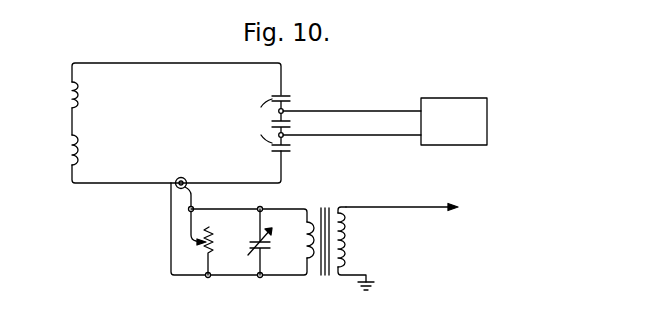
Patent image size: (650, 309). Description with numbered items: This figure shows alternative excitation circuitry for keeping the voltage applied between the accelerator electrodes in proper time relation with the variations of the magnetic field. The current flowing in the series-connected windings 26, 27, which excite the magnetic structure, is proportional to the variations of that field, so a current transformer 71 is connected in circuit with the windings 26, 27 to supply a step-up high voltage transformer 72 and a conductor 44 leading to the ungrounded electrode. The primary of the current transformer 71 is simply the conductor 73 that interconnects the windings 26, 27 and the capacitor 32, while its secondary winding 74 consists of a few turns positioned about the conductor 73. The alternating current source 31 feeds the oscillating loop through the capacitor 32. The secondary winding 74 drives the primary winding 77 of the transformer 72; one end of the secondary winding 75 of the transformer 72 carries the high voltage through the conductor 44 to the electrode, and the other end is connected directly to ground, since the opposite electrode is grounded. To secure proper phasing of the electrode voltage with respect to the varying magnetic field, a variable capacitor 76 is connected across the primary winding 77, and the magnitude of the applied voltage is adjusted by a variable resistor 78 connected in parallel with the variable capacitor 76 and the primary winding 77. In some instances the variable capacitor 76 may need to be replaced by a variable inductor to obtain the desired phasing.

The winding 26 is at (68, 96).
The winding 27 is at (68, 152).
The source of alternating current 31 is at (468, 146).
The capacitor 32 is at (272, 124).
The conductor 44 is at (410, 206).
The current transformer 71 is at (190, 175).
The step-up high voltage transformer 72 is at (338, 205).
The conductor 73 is at (88, 186).
The secondary winding 74 is at (194, 190).
The secondary winding 75 is at (351, 240).
The variable capacitor 76 is at (274, 242).
The primary winding 77 is at (306, 247).
The variable resistor 78 is at (222, 251).